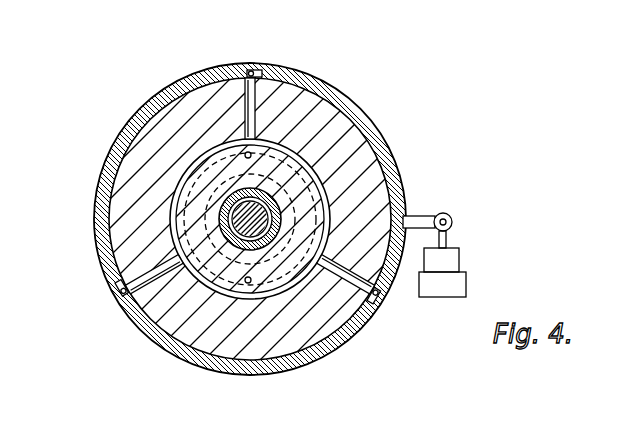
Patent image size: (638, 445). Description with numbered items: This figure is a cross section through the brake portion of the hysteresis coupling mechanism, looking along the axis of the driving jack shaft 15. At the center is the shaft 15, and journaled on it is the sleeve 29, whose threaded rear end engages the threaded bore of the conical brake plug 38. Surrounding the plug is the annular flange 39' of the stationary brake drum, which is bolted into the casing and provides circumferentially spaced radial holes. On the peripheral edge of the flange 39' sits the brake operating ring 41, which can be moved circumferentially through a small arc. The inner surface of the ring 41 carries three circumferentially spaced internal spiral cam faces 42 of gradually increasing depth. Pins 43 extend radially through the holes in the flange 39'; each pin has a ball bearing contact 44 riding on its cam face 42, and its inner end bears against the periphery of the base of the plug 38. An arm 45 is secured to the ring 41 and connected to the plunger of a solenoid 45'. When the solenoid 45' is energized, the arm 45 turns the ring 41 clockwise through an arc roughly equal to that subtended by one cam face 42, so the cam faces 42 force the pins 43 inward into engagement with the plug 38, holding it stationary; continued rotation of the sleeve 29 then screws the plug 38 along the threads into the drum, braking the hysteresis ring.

The driving jack shaft 15 is at (218, 205).
The sleeve 29 is at (223, 227).
The conical brake plug 38 is at (310, 207).
The annular flange 39' is at (319, 222).
The brake operating ring 41 is at (178, 348).
The internal spiral cam faces 42 is at (368, 303).
The pins 43 is at (258, 110).
The ball bearing contact 44 is at (252, 72).
The arm 45 is at (445, 218).
The solenoid 45' is at (471, 271).